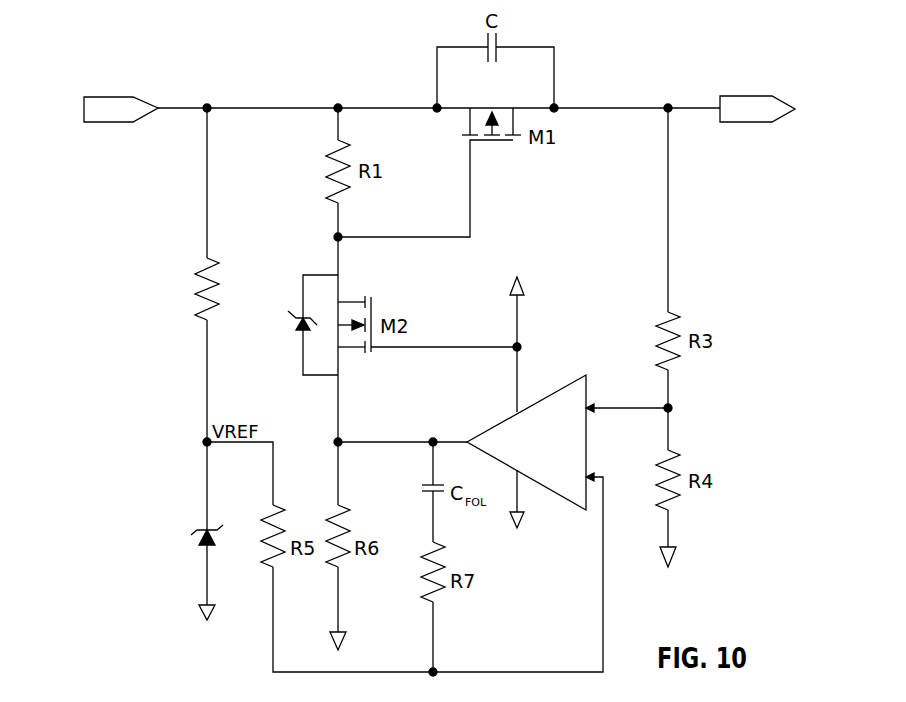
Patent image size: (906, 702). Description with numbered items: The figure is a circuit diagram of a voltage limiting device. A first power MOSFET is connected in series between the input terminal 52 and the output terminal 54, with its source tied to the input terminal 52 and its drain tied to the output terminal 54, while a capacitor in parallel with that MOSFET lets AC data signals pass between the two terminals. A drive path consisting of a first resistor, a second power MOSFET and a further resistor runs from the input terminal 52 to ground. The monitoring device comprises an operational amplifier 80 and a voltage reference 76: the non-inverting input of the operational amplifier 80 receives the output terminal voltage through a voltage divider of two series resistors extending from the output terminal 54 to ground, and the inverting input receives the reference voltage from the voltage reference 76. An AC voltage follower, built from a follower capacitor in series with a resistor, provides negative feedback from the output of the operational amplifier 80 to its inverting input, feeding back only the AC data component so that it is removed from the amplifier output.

The input terminal 52 is at (207, 105).
The output terminal 54 is at (668, 105).
The voltage reference 76 is at (205, 451).
The operational amplifier 80 is at (551, 490).